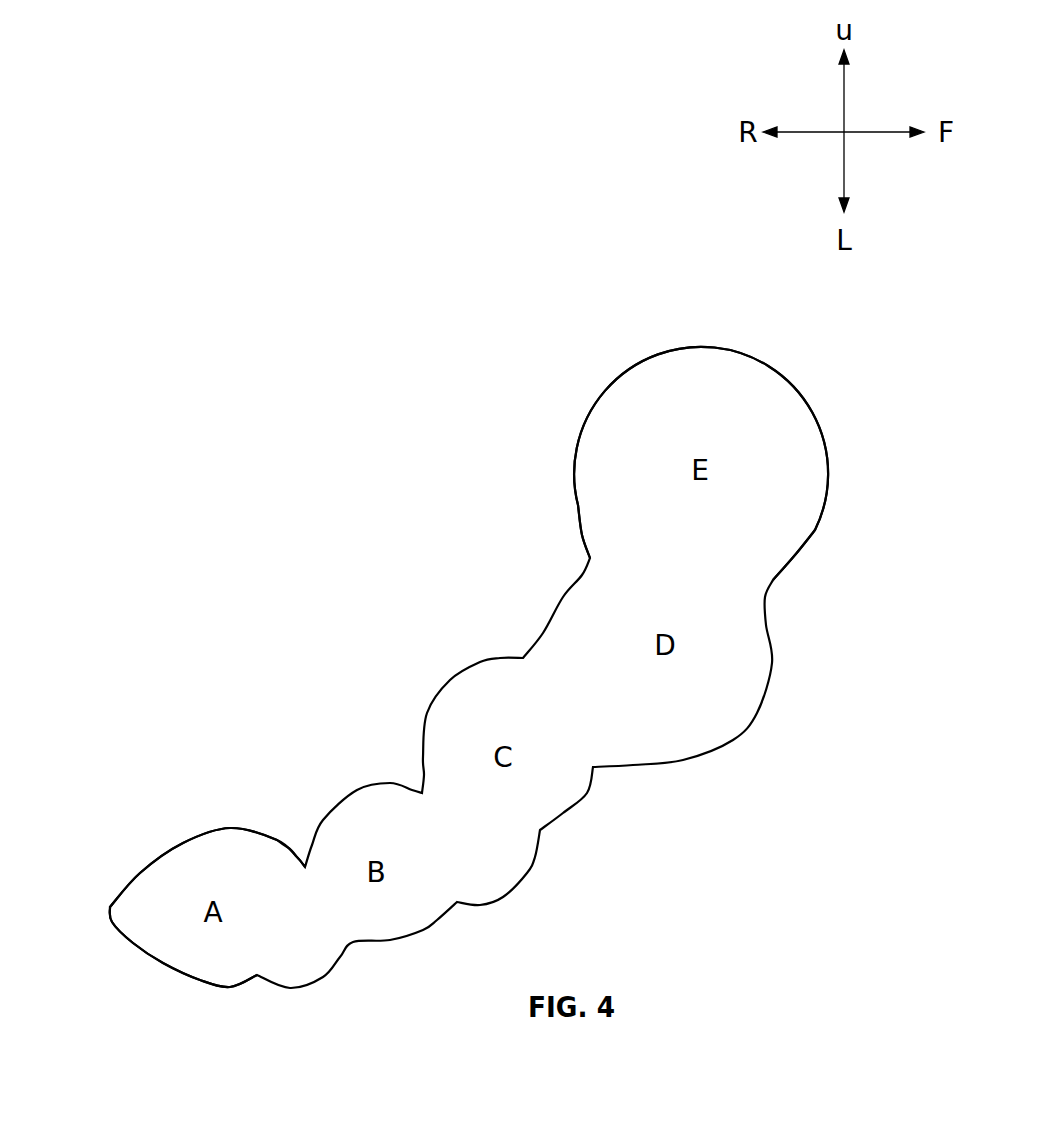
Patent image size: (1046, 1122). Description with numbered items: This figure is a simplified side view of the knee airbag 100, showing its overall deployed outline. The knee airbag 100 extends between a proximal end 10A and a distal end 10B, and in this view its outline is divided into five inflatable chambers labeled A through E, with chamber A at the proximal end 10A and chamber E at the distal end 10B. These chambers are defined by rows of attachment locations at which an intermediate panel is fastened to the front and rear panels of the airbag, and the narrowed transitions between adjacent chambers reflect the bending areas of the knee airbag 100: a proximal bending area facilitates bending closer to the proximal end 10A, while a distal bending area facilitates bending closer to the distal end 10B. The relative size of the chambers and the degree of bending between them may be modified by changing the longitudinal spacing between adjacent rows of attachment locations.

The knee airbag 100 is at (204, 274).
The proximal end 10A is at (137, 945).
The distal end 10B is at (790, 380).